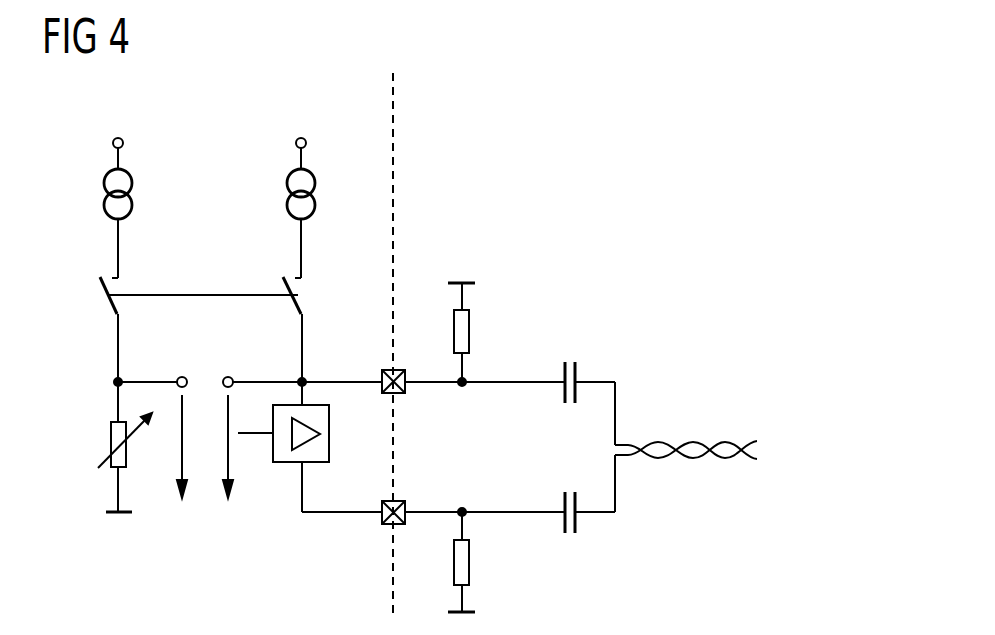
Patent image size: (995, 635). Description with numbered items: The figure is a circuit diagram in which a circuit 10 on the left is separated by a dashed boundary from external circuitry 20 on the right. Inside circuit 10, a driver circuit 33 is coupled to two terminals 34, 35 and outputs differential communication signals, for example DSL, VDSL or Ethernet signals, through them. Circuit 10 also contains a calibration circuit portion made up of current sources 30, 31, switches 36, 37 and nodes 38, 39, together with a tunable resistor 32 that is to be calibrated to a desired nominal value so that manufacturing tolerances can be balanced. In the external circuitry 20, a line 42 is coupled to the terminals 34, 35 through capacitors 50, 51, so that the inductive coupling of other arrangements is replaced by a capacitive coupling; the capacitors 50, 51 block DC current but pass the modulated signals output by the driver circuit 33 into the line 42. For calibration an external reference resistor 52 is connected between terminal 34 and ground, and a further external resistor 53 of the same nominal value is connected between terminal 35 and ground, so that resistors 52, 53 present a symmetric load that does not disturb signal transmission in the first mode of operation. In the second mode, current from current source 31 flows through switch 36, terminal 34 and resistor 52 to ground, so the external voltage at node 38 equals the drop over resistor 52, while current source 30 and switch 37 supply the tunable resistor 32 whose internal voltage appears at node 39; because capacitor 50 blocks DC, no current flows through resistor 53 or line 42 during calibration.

The circuit 10 is at (230, 104).
The external circuitry 20 is at (560, 104).
The current source 30 is at (104, 183).
The current source 31 is at (287, 183).
The tunable resistor 32 is at (111, 437).
The driver circuit 33 is at (329, 425).
The terminal 34 is at (394, 370).
The terminal 35 is at (388, 526).
The switch 36 is at (300, 303).
The switch 37 is at (100, 286).
The node 38 is at (228, 377).
The node 39 is at (182, 377).
The line 42 is at (722, 445).
The capacitor 50 is at (568, 360).
The capacitor 51 is at (578, 525).
The external reference resistor 52 is at (470, 338).
The external resistor 53 is at (470, 565).